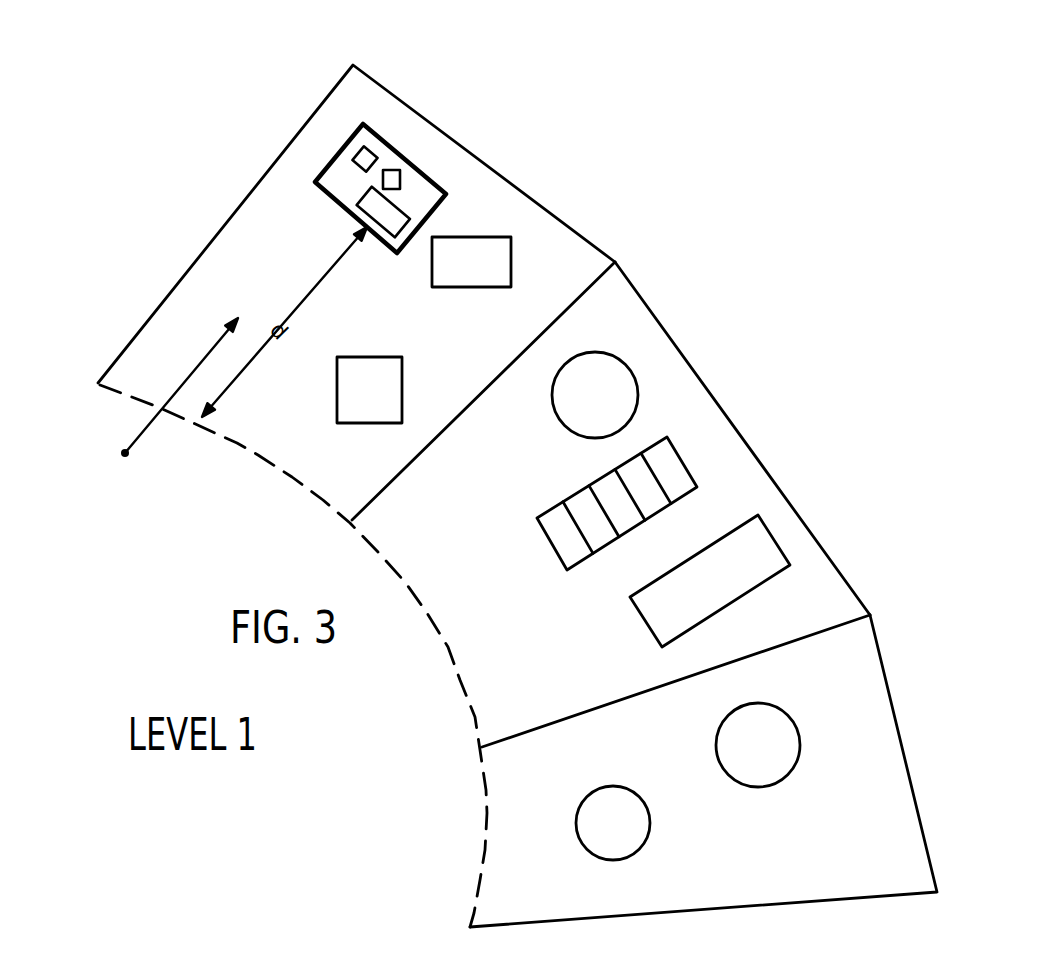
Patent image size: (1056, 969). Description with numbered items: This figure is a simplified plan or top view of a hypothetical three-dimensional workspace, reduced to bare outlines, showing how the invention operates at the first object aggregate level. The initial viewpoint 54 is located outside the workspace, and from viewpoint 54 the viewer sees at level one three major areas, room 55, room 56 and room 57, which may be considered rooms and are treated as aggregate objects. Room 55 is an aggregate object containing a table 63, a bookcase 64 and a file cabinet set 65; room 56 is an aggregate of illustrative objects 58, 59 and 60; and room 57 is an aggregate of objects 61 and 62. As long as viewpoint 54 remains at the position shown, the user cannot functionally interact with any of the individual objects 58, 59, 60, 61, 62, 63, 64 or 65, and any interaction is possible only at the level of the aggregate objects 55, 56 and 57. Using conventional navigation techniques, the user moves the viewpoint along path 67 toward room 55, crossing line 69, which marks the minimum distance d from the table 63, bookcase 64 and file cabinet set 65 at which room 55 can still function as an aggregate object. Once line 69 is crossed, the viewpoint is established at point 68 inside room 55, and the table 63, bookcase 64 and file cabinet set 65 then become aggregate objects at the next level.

The viewpoint 54 is at (127, 455).
The room 55 is at (308, 258).
The room 56 is at (563, 337).
The room 57 is at (860, 707).
The illustrative object 58 is at (607, 388).
The illustrative object 59 is at (662, 478).
The illustrative object 60 is at (760, 555).
The object 61 is at (772, 758).
The object 62 is at (620, 835).
The table 63 is at (410, 193).
The bookcase 64 is at (483, 237).
The file cabinet set 65 is at (402, 363).
The path 67 is at (183, 380).
The point 68 is at (238, 317).
The line 69 is at (288, 473).